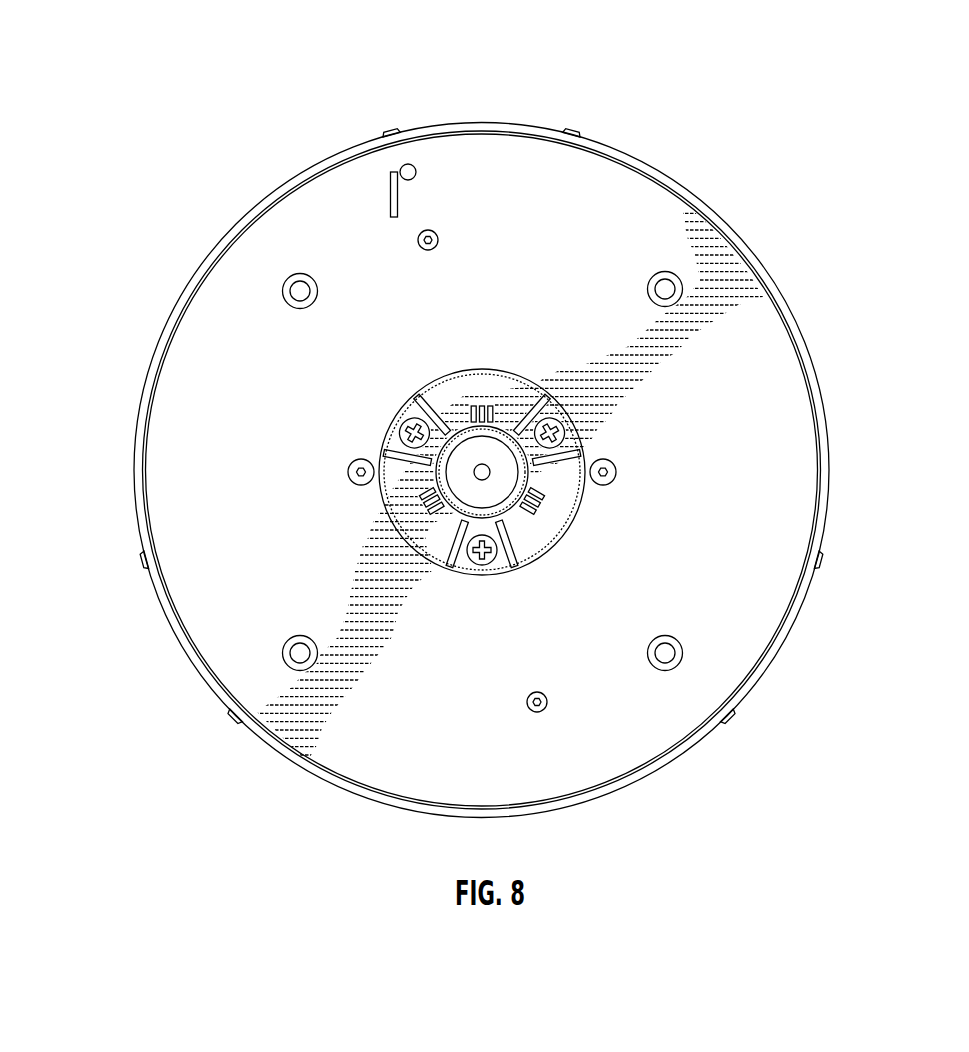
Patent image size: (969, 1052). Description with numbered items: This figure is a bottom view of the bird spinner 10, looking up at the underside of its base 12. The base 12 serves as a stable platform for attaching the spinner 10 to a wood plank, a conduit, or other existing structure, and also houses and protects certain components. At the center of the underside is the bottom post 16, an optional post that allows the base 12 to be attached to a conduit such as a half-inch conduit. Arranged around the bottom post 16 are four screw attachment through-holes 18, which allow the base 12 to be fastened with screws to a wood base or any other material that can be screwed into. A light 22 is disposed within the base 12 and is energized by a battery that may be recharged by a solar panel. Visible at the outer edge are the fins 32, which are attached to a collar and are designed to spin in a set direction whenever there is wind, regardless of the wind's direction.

The bird spinner 10 is at (707, 118).
The base 12 is at (137, 422).
The bottom post 16 is at (507, 473).
The screw attachment through-holes 18 is at (282, 291).
The light 22 is at (428, 230).
The fins 32 is at (392, 123).